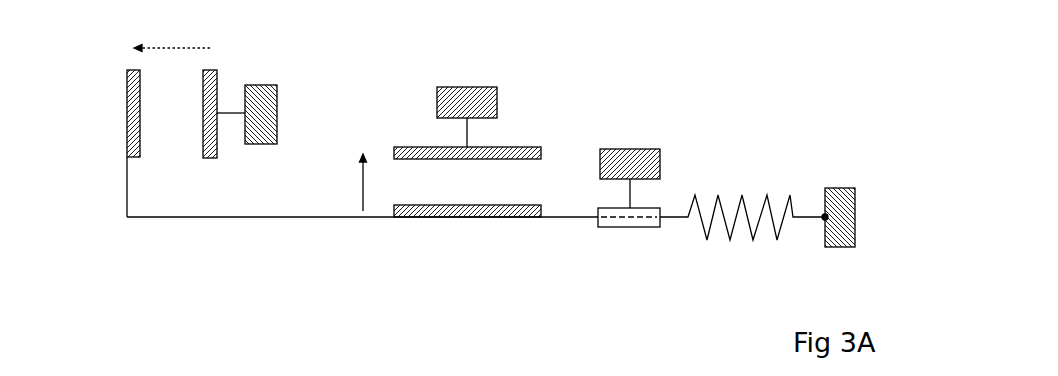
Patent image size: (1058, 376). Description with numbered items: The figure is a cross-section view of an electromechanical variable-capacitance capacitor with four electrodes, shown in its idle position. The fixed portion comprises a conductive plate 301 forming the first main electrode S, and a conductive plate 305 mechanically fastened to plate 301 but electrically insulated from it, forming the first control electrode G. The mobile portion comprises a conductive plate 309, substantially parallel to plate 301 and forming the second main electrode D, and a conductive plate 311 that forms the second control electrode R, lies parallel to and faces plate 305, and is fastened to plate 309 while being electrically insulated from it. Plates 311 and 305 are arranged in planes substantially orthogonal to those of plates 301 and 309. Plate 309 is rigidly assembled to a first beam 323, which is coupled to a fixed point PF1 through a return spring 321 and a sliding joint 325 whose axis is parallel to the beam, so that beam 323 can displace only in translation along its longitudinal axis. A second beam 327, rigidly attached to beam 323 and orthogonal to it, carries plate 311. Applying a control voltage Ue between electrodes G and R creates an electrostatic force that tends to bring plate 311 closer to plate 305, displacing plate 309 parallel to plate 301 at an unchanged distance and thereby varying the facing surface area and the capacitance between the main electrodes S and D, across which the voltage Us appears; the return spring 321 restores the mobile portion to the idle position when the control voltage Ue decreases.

The control voltage Ue is at (172, 35).
The second control electrode R is at (127, 83).
The first control electrode G is at (217, 76).
The conductive plate 311 is at (126, 133).
The conductive plate 305 is at (243, 120).
The second beam 327 is at (127, 188).
The first beam 323 is at (203, 218).
The voltage between main electrodes Us is at (349, 182).
The conductive plate 301 is at (405, 147).
The first main electrode S is at (523, 147).
The conductive plate 309 is at (437, 187).
The second main electrode D is at (510, 205).
The sliding joint 325 is at (622, 228).
The return spring 321 is at (743, 197).
The fixed point PF1 is at (825, 220).